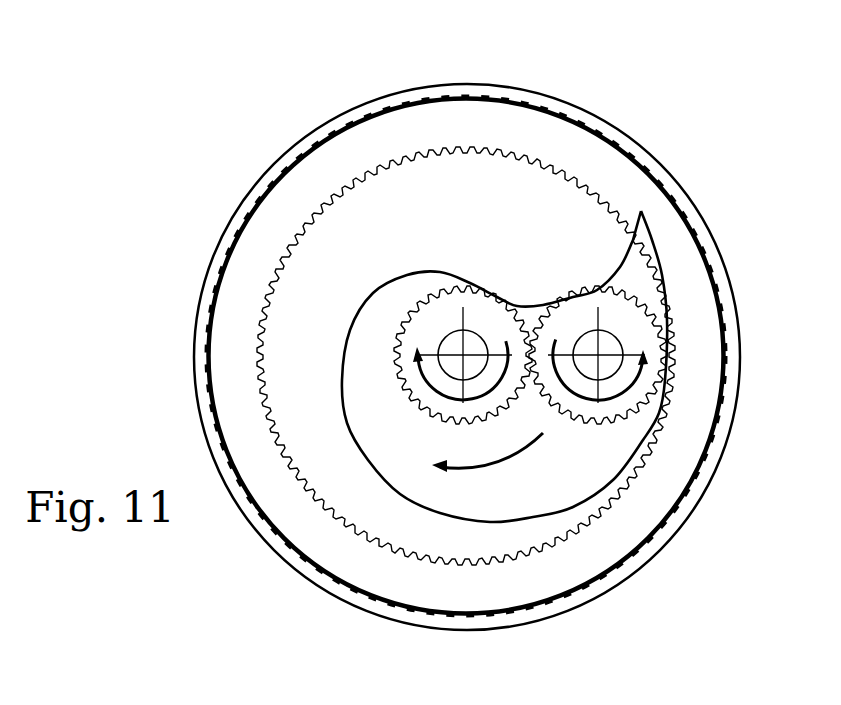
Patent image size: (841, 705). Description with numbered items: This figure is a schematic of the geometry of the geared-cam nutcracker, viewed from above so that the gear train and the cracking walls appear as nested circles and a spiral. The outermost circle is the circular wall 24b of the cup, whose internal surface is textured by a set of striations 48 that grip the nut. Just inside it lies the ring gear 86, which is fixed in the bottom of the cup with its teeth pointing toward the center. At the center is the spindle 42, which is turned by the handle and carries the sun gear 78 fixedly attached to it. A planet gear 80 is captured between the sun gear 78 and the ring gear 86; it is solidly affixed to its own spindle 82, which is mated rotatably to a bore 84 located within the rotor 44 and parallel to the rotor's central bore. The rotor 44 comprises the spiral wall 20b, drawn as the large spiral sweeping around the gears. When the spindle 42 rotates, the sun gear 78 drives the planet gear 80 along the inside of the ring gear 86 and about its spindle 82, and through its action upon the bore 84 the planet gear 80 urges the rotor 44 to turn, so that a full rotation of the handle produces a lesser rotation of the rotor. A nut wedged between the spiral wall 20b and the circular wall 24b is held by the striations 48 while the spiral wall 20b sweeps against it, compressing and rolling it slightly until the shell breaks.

The spiral wall 20b is at (537, 517).
The circular wall 24b is at (400, 615).
The spindle 42 is at (482, 350).
The rotor 44 is at (570, 463).
The striations 48 is at (292, 546).
The sun gear 78 is at (443, 315).
The planet gear 80 is at (643, 334).
The planet gear spindle 82 is at (590, 345).
The bore 84 is at (610, 378).
The ring gear 86 is at (362, 150).